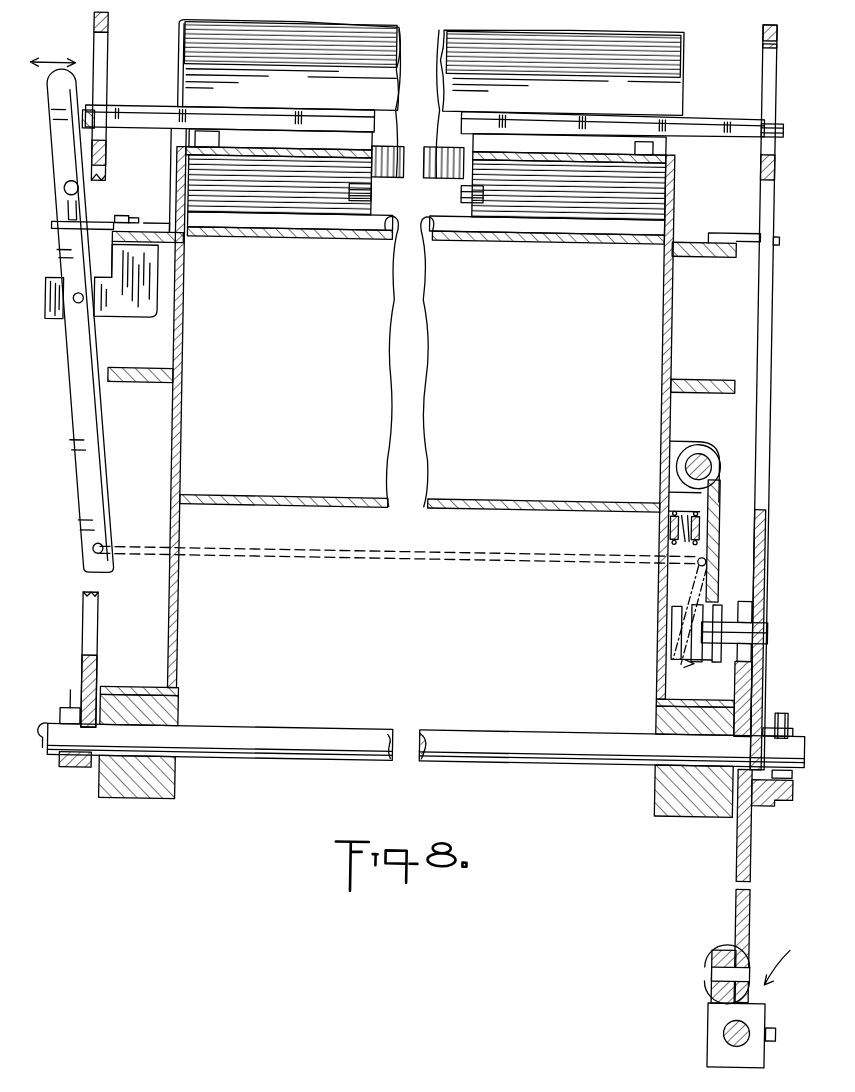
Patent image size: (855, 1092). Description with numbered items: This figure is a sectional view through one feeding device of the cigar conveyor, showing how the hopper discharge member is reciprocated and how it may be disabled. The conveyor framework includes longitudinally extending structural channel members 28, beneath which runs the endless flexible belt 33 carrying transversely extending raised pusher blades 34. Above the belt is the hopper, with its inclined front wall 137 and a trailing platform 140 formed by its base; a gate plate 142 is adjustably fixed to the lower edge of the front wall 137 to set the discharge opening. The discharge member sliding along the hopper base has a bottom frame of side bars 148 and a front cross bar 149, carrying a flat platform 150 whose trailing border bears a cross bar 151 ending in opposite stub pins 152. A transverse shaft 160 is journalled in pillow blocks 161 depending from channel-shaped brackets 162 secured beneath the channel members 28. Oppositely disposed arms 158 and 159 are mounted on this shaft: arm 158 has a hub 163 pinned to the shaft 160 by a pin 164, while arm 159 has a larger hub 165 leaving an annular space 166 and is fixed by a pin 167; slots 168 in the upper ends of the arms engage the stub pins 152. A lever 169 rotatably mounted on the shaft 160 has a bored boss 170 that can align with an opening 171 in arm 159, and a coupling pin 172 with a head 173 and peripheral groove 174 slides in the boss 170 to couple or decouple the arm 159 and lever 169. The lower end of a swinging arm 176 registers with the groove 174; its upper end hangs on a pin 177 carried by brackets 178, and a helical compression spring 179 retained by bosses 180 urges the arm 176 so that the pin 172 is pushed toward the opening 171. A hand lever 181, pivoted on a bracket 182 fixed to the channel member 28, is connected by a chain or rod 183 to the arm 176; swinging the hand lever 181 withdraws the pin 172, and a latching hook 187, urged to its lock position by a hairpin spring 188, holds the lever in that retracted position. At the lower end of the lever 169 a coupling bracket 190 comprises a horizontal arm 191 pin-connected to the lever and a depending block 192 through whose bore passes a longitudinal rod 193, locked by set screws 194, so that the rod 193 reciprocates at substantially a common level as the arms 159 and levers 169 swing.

The structural channel members 28 is at (179, 324).
The endless flexible belt 33 is at (543, 242).
The pusher blades 34 is at (407, 361).
The front wall 137 is at (454, 46).
The trailing platform 140 is at (532, 152).
The gate plate 142 is at (392, 132).
The side bars 148 is at (201, 142).
The front cross bar 149 is at (455, 199).
The platform 150 is at (490, 140).
The cross bar 151 is at (328, 111).
The stub pins 152 is at (84, 115).
The arm 158 is at (99, 34).
The arm 159 is at (754, 27).
The transverse shaft 160 is at (431, 732).
The pillow blocks 161 is at (133, 804).
The brackets 162 is at (179, 646).
The hub 163 is at (82, 774).
The pin 164 is at (71, 712).
The hub 165 is at (738, 700).
The annular space 166 is at (773, 800).
The pin 167 is at (786, 706).
The slots 168 is at (92, 80).
The lever 169 is at (738, 898).
The bored boss 170 is at (754, 590).
The opening 171 is at (753, 601).
The coupling pin 172 is at (769, 627).
The head 173 is at (673, 620).
The peripheral groove 174 is at (679, 636).
The arm 176 is at (720, 490).
The pin 177 is at (714, 442).
The brackets 178 is at (678, 443).
The helical compression spring 179 is at (678, 518).
The bosses 180 is at (669, 522).
The hand lever 181 is at (70, 398).
The bracket 182 is at (120, 318).
The chain or rod 183 is at (435, 570).
The latching hook 187 is at (42, 231).
The hairpin spring 188 is at (142, 227).
The coupling bracket 190 is at (786, 958).
The horizontal arm 191 is at (719, 960).
The depending block 192 is at (770, 1012).
The rod 193 is at (733, 1029).
The set screws 194 is at (784, 1035).